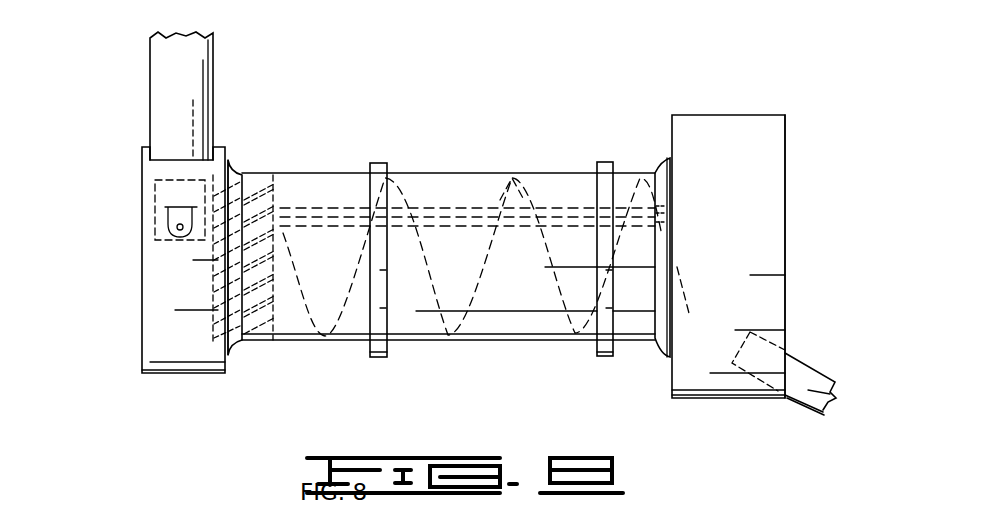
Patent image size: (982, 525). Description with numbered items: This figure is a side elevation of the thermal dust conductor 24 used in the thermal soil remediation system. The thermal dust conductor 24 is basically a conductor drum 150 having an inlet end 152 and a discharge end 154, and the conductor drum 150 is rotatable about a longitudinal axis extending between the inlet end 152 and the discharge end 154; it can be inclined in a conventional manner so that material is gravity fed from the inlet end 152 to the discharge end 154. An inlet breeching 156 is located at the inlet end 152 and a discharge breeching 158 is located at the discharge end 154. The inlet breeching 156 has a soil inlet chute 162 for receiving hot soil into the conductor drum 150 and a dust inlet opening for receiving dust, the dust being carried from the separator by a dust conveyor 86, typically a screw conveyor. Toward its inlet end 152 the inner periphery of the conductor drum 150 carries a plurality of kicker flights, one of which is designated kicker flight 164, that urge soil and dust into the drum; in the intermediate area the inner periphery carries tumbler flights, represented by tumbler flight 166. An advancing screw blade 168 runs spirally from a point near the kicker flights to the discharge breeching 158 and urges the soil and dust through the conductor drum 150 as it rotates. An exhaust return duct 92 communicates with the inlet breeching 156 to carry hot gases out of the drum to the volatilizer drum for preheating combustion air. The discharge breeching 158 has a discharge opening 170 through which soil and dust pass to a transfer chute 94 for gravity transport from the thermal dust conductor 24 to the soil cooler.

The thermal dust conductor 24 is at (408, 150).
The dust conveyor 86 is at (164, 208).
The exhaust return duct 92 is at (162, 58).
The transfer chute 94 is at (822, 412).
The conductor drum 150 is at (437, 173).
The inlet end 152 is at (212, 275).
The discharge end 154 is at (785, 178).
The inlet breeching 156 is at (168, 297).
The discharge breeching 158 is at (698, 137).
The soil inlet chute 162 is at (153, 190).
The kicker flight 164 is at (253, 175).
The tumbler flight 166 is at (304, 171).
The advancing screw blade 168 is at (522, 165).
The discharge opening 170 is at (792, 348).